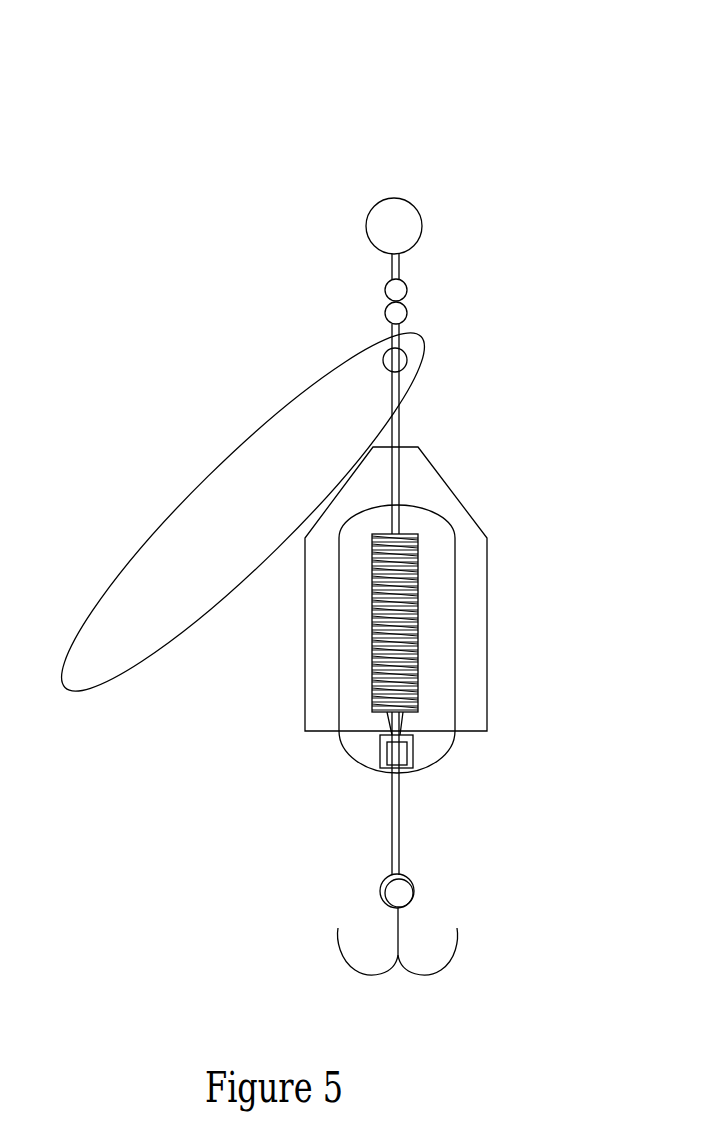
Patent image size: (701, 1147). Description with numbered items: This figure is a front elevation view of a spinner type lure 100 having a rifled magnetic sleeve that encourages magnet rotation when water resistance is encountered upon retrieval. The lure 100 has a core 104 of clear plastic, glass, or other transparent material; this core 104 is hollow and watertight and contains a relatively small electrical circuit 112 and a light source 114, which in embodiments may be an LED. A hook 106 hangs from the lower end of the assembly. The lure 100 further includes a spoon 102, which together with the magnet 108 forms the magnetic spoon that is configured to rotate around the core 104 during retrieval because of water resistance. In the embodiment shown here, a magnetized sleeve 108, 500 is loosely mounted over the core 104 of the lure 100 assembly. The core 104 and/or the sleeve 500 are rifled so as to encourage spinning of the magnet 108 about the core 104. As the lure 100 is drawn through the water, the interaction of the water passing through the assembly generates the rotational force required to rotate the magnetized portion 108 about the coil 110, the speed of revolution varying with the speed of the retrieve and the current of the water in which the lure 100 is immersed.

The spinner type lure 100 is at (367, 203).
The spoon 102 is at (254, 428).
The core 104 is at (448, 748).
The hook 106 is at (457, 932).
The magnet 108 is at (537, 470).
The magnetized sleeve 500 is at (455, 581).
The coil 110 is at (417, 638).
The electrical circuit 112 is at (383, 766).
The light source 114 is at (388, 762).